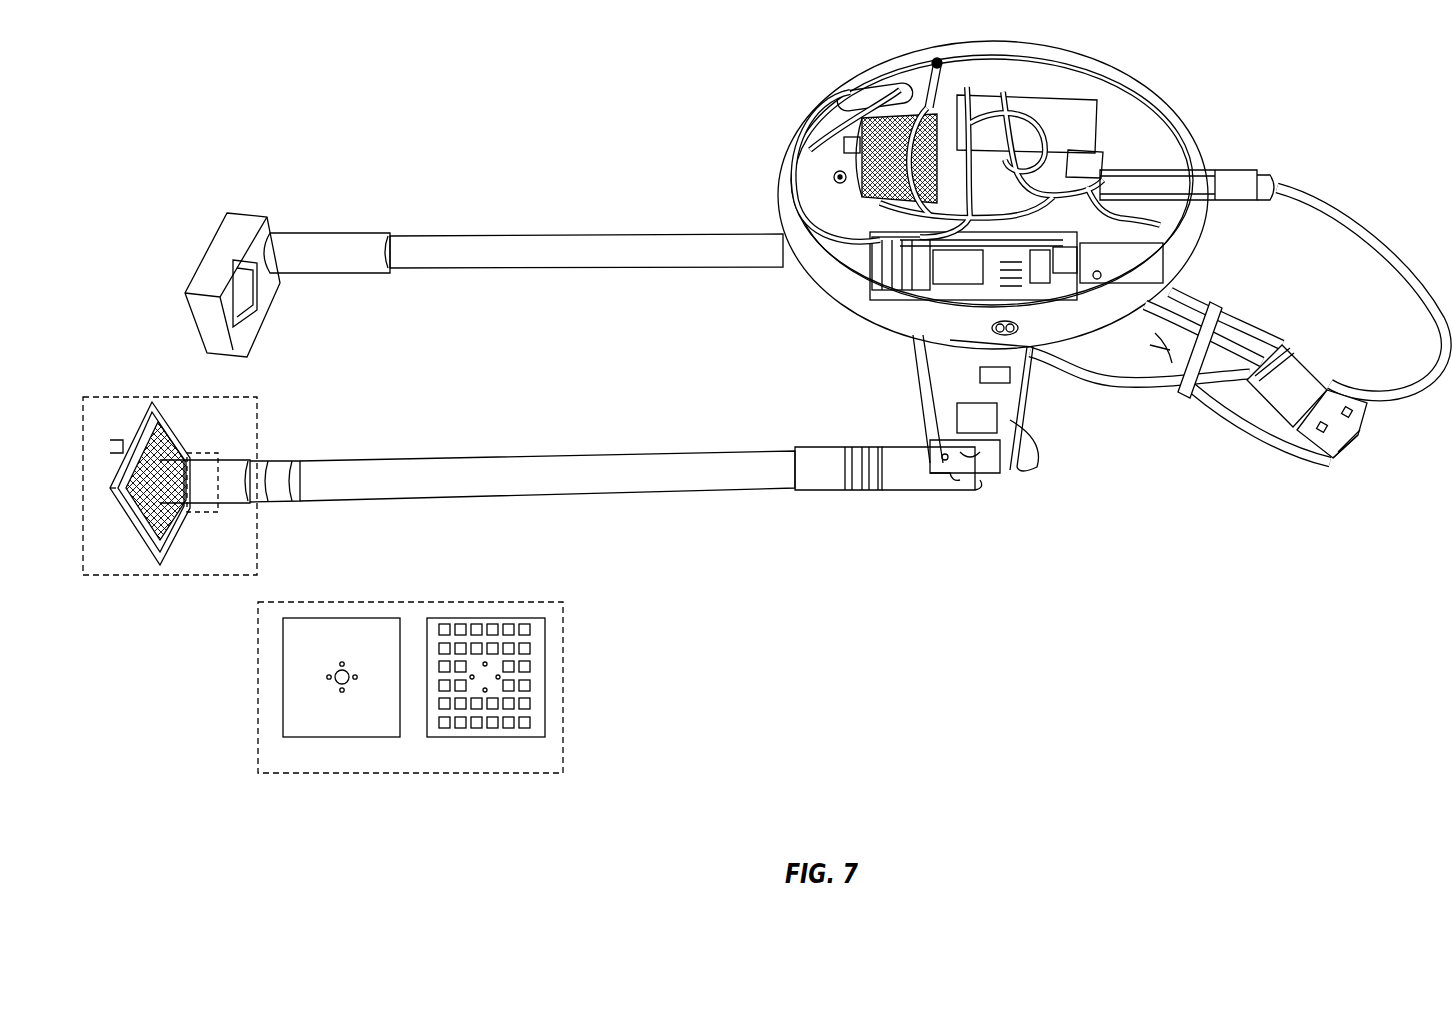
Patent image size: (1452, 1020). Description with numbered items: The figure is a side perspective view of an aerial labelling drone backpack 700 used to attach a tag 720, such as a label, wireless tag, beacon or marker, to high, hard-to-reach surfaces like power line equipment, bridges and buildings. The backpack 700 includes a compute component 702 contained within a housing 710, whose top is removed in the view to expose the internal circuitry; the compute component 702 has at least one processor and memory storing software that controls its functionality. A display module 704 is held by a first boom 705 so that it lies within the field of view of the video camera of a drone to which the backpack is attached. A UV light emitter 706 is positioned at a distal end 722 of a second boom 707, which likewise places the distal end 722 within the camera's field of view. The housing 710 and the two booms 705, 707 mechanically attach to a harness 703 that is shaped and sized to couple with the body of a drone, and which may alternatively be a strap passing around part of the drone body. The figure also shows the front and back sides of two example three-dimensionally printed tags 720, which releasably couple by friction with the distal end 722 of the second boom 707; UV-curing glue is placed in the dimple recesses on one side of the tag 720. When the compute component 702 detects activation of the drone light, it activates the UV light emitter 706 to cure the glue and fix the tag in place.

The aerial labelling drone backpack 700 is at (206, 88).
The compute component 702 is at (778, 81).
The harness 703 is at (925, 373).
The display module 704 is at (210, 262).
The first boom 705 is at (550, 232).
The UV light emitter 706 is at (212, 452).
The second boom 707 is at (715, 452).
The housing 710 is at (1104, 82).
The tag 720 is at (492, 600).
The distal end 722 is at (162, 596).